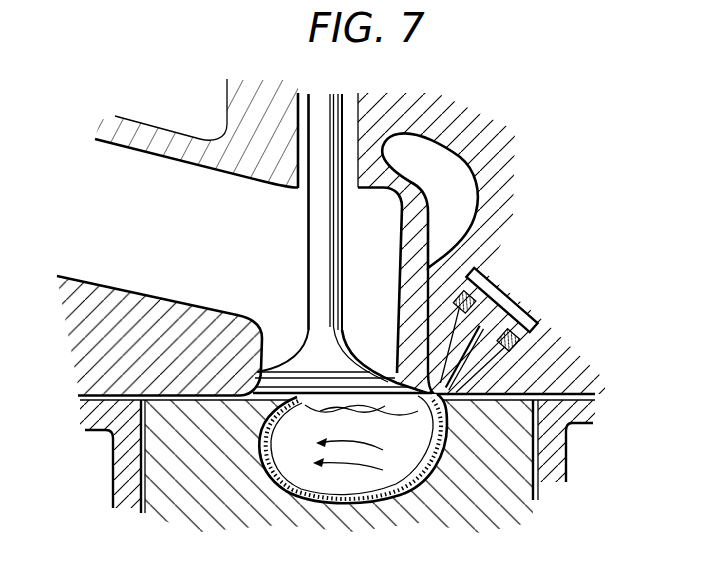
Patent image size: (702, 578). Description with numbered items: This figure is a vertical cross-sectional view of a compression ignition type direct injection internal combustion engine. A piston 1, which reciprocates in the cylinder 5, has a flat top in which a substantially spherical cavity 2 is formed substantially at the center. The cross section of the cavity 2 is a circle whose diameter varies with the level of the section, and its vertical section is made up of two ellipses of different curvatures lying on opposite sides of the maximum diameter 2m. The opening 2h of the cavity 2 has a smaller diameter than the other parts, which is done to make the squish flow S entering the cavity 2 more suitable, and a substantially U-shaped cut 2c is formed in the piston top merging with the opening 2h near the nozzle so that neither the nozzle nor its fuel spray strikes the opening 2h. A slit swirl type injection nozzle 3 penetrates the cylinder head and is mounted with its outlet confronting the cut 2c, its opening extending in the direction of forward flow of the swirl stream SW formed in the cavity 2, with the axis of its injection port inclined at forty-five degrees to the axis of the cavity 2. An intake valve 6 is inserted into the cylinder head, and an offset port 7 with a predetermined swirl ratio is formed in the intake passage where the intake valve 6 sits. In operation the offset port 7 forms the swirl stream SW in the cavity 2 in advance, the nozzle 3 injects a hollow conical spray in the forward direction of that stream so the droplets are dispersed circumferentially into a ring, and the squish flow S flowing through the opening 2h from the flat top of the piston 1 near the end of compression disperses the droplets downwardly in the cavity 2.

The piston 1 is at (533, 490).
The cavity 2 is at (410, 493).
The cut 2c is at (446, 416).
The opening 2h is at (294, 399).
The maximum diameter 2m is at (267, 463).
The swirl type injection nozzle 3 is at (503, 318).
The cylinder 5 is at (113, 442).
The intake valve 6 is at (330, 122).
The offset port 7 is at (413, 207).
The squish flow S is at (325, 397).
The swirl stream SW is at (372, 452).